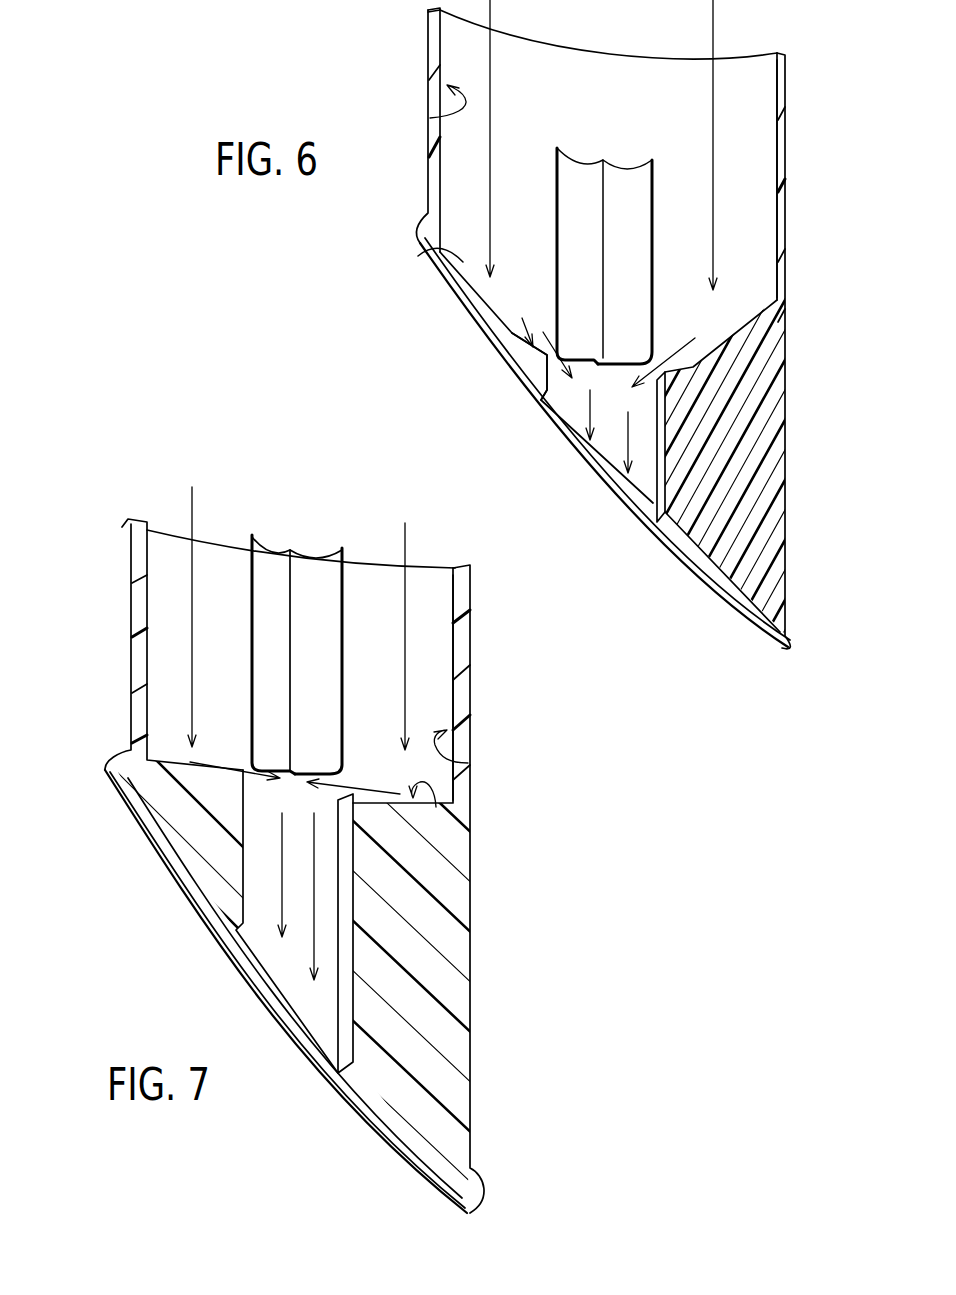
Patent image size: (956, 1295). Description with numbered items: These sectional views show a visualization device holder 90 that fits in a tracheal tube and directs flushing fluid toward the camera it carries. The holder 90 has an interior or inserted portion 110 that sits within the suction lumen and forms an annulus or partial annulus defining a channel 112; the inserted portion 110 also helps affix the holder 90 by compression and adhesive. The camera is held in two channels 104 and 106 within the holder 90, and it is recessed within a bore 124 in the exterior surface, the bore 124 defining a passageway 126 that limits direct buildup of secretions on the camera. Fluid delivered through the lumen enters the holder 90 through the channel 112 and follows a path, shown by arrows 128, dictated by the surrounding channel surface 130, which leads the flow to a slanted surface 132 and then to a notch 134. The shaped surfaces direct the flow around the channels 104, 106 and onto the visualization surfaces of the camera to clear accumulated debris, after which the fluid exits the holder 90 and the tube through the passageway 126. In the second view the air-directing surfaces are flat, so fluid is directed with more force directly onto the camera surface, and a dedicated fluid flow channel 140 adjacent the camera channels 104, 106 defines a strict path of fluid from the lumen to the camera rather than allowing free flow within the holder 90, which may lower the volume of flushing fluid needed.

In FIG. 6, the holder 90 is at (780, 147).
In FIG. 7, the holder 90 is at (137, 655).
In FIG. 6, the channel 104 is at (556, 258).
In FIG. 6, the channel 106 is at (657, 297).
In FIG. 6, the inserted portion 110 is at (428, 44).
In FIG. 6, the channel 112 is at (744, 83).
In FIG. 7, the channel 112 is at (433, 670).
In FIG. 6, the bore 124 is at (663, 462).
In FIG. 6, the passageway 126 is at (641, 482).
In FIG. 6, the fluid flow arrows 128 is at (492, 170).
In FIG. 7, the fluid flow arrows 128 is at (407, 543).
In FIG. 6, the surrounding channel surface 130 is at (430, 118).
In FIG. 7, the surrounding channel surface 130 is at (468, 763).
In FIG. 6, the slanted surface 132 is at (430, 248).
In FIG. 6, the notch 134 is at (513, 333).
In FIG. 7, the fluid flow channel 140 is at (436, 807).